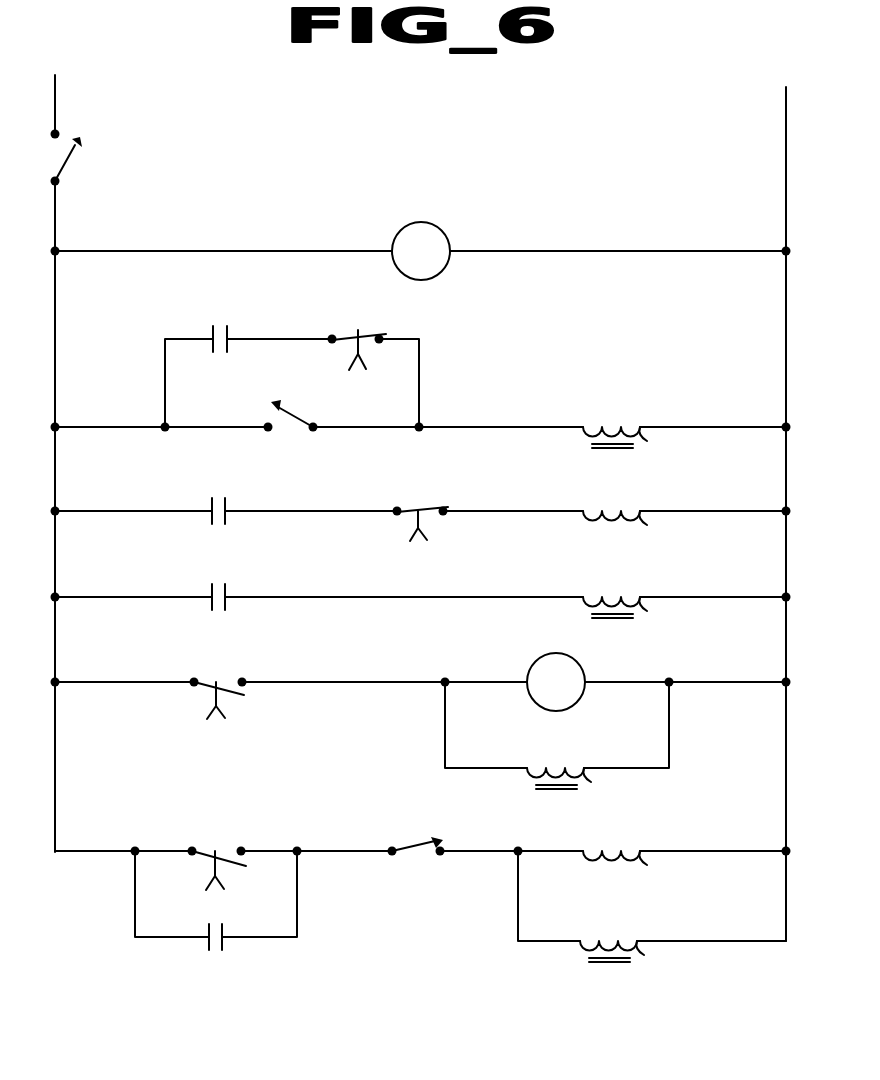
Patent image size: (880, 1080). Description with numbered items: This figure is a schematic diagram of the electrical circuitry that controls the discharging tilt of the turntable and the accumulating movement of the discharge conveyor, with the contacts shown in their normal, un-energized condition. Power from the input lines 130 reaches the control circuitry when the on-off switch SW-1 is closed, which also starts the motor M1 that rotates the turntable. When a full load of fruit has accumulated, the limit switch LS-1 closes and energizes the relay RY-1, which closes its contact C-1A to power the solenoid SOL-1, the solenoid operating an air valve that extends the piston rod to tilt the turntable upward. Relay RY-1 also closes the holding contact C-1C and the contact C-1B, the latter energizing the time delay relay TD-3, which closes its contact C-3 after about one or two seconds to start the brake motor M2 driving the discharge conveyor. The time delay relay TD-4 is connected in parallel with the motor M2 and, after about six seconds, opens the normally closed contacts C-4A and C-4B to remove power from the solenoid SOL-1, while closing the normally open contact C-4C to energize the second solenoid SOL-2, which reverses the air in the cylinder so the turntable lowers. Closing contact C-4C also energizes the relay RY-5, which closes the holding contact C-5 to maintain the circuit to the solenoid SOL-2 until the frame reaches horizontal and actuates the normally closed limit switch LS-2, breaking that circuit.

The input lines 130 is at (55, 82).
The on-off switch SW-1 is at (72, 162).
The motor M1 is at (437, 256).
The holding contact C-1C is at (229, 328).
The normally closed contact C-4A is at (360, 330).
The limit switch LS-1 is at (287, 408).
The relay RY-1 is at (421, 442).
The contact C-1A is at (236, 491).
The normally closed contact C-4B is at (421, 494).
The solenoid SOL-1 is at (421, 524).
The contact C-1B is at (236, 577).
The time delay relay TD-3 is at (421, 613).
The contact C-3 is at (218, 680).
The brake motor M2 is at (571, 687).
The time delay relay TD-4 is at (557, 738).
The normally open contact C-4C is at (228, 833).
The normally closed limit switch LS-2 is at (412, 848).
The second solenoid SOL-2 is at (423, 868).
The holding contact C-5 is at (207, 945).
The relay RY-5 is at (650, 911).